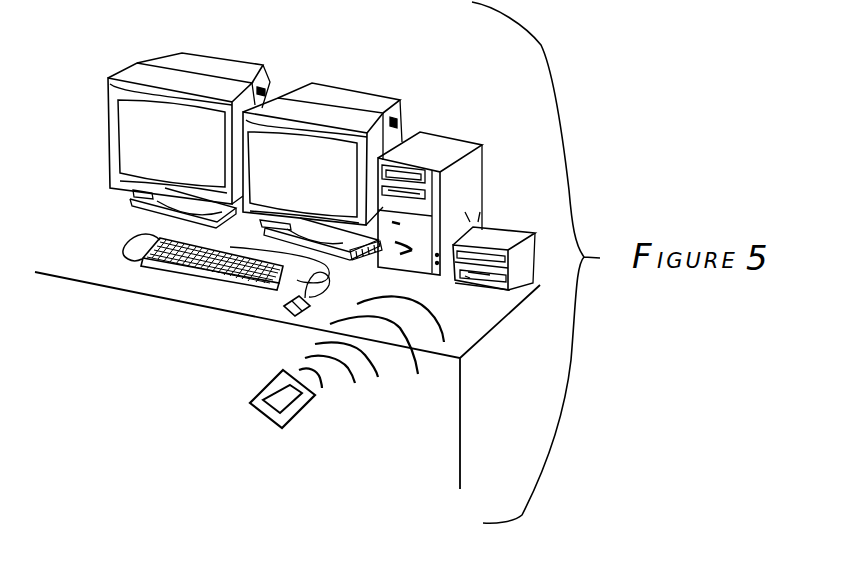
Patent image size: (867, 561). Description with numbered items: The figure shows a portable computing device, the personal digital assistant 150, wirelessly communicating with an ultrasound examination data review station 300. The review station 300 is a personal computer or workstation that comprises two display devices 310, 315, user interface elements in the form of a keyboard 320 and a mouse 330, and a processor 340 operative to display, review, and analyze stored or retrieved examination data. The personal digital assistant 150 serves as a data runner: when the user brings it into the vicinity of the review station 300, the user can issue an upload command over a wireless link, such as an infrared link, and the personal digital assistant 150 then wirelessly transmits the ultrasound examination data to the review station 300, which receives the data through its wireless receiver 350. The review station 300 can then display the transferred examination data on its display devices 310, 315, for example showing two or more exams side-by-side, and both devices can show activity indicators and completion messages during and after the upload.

The review station 300 is at (464, 57).
The display device 310 is at (122, 74).
The display device 315 is at (280, 97).
The keyboard 320 is at (138, 275).
The mouse 330 is at (282, 308).
The processor 340 is at (462, 133).
The wireless receiver 350 is at (450, 251).
The personal digital assistant 150 is at (295, 415).